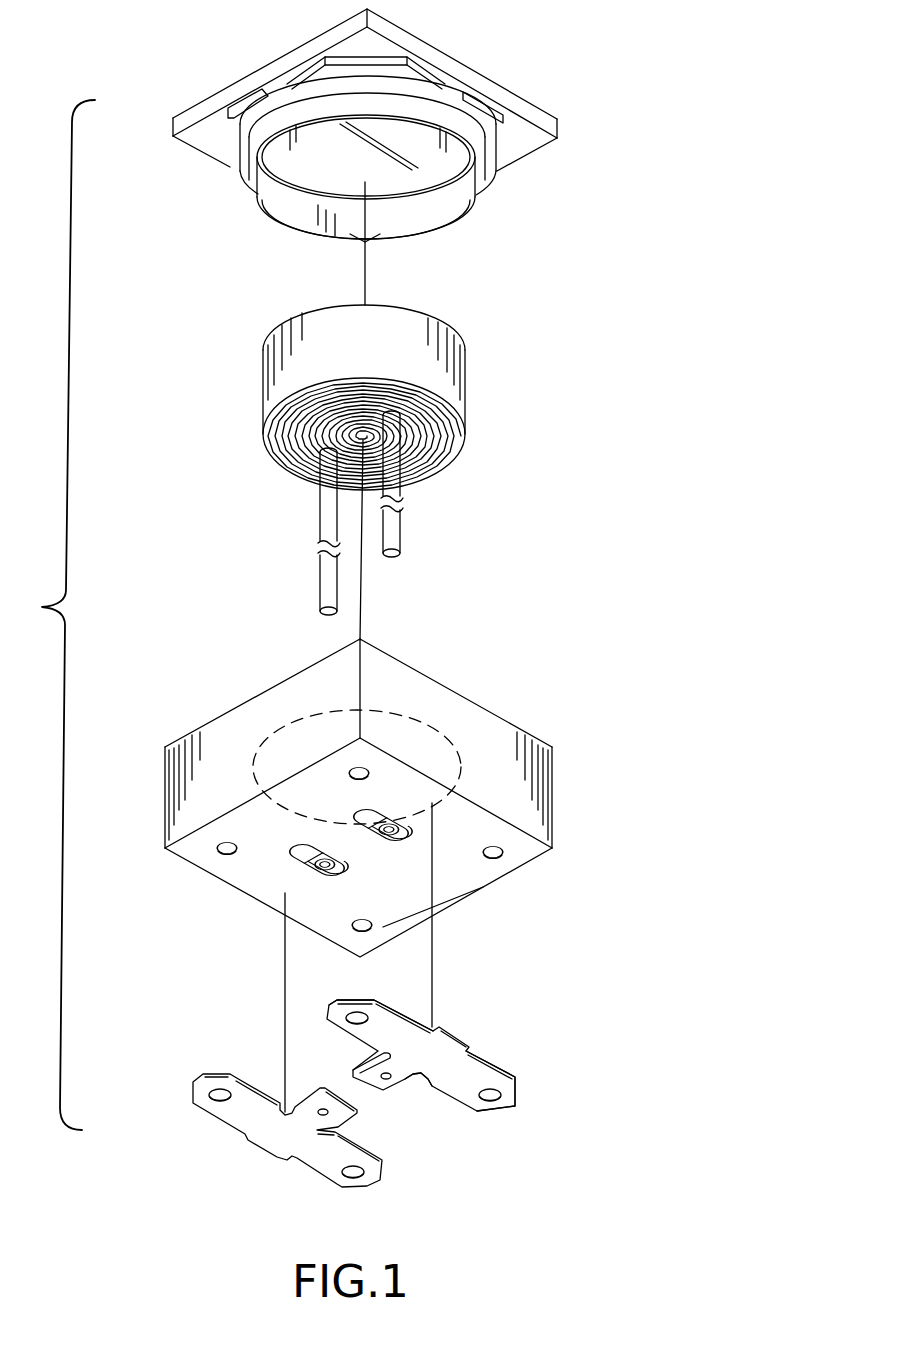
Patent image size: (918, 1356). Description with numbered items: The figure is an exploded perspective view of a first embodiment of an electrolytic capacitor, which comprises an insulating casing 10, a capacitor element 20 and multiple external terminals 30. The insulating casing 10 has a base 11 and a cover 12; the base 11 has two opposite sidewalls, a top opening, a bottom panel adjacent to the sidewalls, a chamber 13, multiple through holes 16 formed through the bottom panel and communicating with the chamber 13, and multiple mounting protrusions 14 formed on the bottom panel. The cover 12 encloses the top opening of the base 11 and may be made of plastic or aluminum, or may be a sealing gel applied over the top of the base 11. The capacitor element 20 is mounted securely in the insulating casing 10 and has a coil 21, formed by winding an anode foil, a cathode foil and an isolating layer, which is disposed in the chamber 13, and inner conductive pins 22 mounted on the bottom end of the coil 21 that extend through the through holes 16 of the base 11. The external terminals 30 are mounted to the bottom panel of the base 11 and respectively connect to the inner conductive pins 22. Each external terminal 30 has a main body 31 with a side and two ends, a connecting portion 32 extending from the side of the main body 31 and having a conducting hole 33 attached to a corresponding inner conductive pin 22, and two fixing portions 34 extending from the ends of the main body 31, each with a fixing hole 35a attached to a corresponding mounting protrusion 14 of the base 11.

The insulating casing 10 is at (401, 798).
The base 11 is at (543, 808).
The cover 12 is at (497, 92).
The chamber 13 is at (417, 720).
The mounting protrusions 14 is at (497, 860).
The through holes 16 is at (312, 863).
The capacitor element 20 is at (405, 460).
The coil 21 is at (453, 387).
The inner conductive pins 22 is at (403, 483).
The external terminals 30 is at (298, 1172).
The main body 31 is at (410, 1067).
The connecting portion 32 is at (405, 1074).
The conducting hole 33 is at (386, 1080).
The fixing portions 34 is at (375, 1013).
The fixing hole 35a is at (352, 1018).